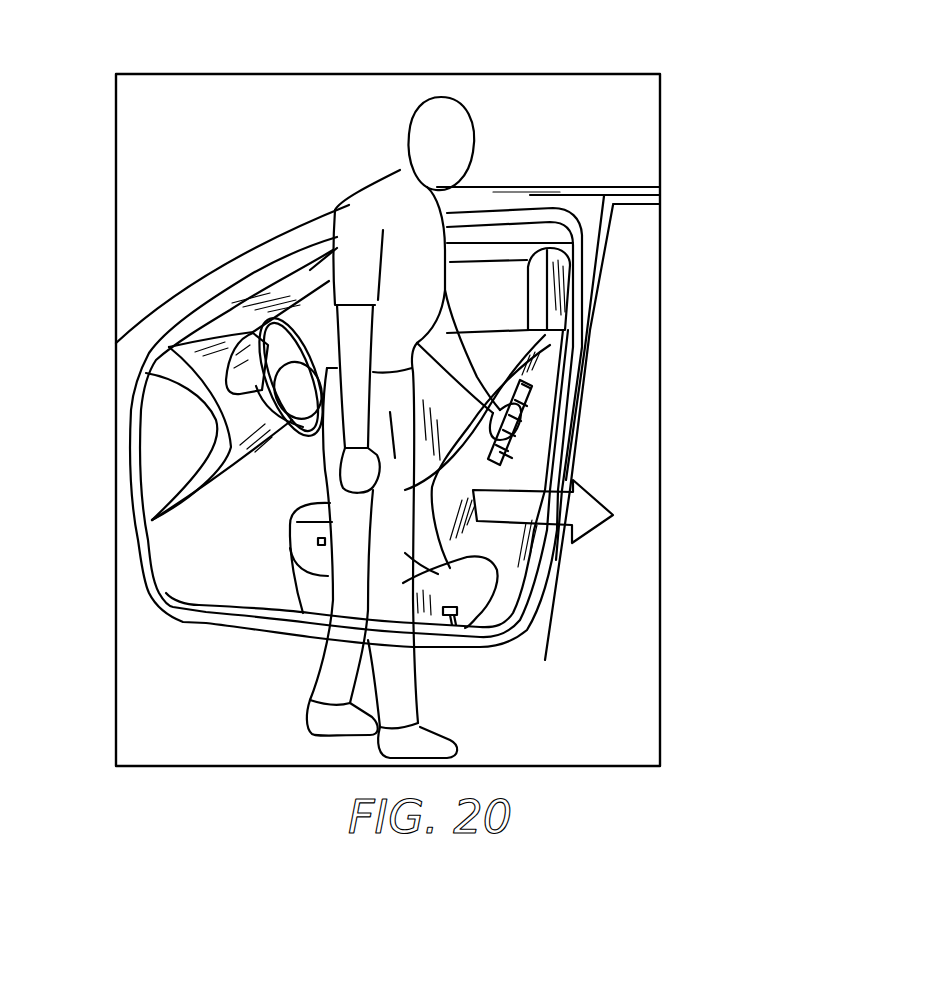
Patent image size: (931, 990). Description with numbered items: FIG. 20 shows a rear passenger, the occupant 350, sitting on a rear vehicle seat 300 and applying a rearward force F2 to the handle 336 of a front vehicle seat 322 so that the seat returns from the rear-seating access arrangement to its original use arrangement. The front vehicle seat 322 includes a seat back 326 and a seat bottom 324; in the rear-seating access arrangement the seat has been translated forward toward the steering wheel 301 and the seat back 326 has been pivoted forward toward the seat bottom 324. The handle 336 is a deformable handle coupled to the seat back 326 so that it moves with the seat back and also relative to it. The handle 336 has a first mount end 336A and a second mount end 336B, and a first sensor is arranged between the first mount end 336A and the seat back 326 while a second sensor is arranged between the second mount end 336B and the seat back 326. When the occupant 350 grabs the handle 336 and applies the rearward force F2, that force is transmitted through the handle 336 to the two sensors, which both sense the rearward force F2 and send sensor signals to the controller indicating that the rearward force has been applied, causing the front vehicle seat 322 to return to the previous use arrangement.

The rear vehicle seat 300 is at (645, 446).
The occupant 350 is at (447, 132).
The steering wheel 301 is at (250, 332).
The seat bottom 324 is at (298, 541).
The seat back 326 is at (543, 338).
The front vehicle seat 322 is at (533, 371).
The handle 336 is at (518, 438).
The first mount end 336A is at (505, 449).
The second mount end 336B is at (535, 391).
The rearward force F2 is at (575, 530).